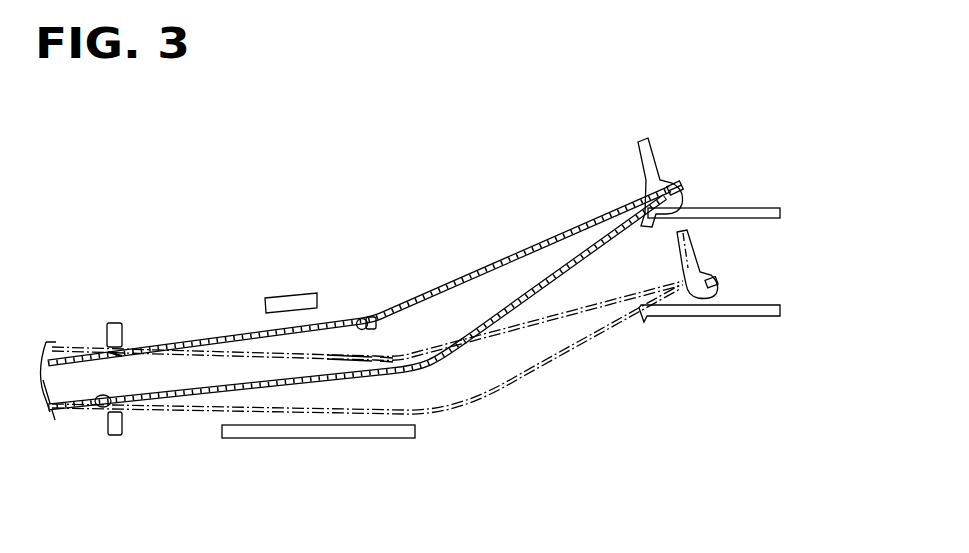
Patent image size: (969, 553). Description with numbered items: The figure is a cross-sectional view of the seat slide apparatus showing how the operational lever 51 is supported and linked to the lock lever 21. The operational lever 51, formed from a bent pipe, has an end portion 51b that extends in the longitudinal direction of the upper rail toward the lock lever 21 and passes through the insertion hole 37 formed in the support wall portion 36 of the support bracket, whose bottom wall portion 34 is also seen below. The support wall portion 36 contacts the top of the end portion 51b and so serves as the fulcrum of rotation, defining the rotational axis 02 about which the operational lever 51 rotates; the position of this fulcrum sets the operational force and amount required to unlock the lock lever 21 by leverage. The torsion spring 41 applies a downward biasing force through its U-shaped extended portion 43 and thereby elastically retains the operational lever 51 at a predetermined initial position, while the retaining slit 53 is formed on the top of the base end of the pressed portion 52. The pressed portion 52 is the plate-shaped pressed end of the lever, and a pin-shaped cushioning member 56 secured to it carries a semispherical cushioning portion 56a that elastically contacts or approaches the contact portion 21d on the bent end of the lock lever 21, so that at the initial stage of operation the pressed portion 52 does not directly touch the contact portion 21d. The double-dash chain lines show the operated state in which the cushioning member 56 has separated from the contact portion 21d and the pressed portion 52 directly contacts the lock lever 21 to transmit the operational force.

The operational lever 51 is at (216, 333).
The end portion 51b is at (440, 292).
The pressed portion 52 is at (627, 205).
The retaining slit 53 is at (359, 318).
The extended portion 43 is at (373, 316).
The torsion spring 41 is at (394, 290).
The support wall portion 36 is at (113, 322).
The insertion hole 37 is at (100, 408).
The rotational axis 02 is at (115, 355).
The bottom wall portion 34 is at (417, 431).
The cushioning member 56 is at (658, 147).
The cushioning portion 56a is at (667, 222).
The contact portion 21d is at (712, 208).
The lock lever 21 is at (781, 190).